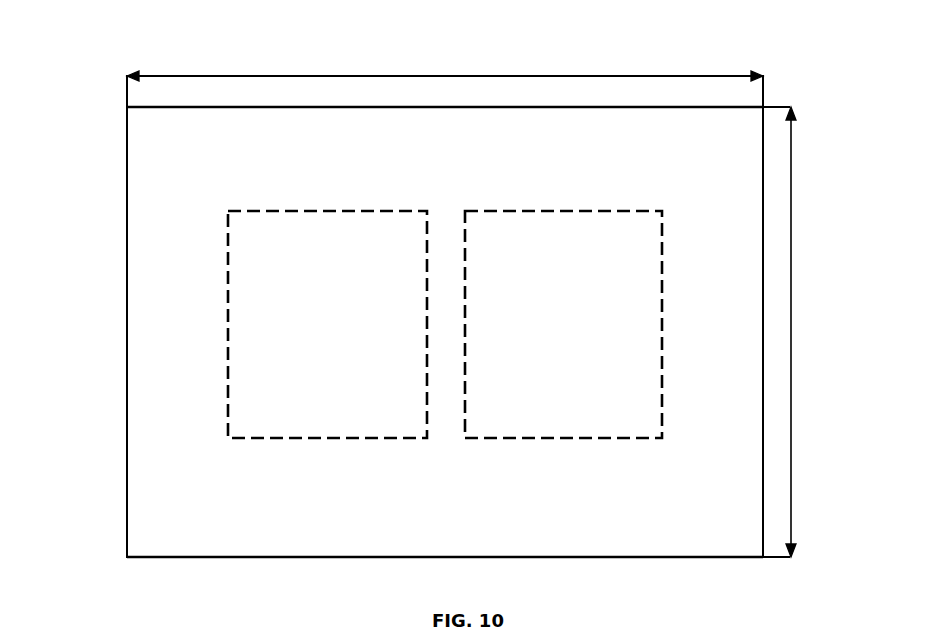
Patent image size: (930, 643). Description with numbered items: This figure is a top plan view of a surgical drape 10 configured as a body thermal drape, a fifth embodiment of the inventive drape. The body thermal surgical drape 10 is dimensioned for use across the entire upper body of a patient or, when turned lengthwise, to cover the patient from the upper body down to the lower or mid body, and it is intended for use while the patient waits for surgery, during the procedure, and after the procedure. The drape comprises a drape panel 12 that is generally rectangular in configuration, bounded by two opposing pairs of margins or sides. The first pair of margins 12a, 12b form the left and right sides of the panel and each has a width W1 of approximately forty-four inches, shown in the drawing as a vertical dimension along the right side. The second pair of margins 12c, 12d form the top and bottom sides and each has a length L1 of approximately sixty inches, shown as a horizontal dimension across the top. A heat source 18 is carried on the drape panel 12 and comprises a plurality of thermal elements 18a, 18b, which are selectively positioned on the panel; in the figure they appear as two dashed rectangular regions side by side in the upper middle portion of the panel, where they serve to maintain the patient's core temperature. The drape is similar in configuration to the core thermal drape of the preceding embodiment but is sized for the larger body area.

The surgical drape 10 is at (804, 72).
The drape panel 12 is at (178, 152).
The margin 12a is at (760, 350).
The margin 12b is at (127, 226).
The margin 12c is at (425, 107).
The margin 12d is at (270, 560).
The heat source 18 is at (445, 294).
The thermal element 18a is at (300, 273).
The thermal element 18b is at (540, 259).
The length L1 is at (647, 72).
The width W1 is at (791, 185).